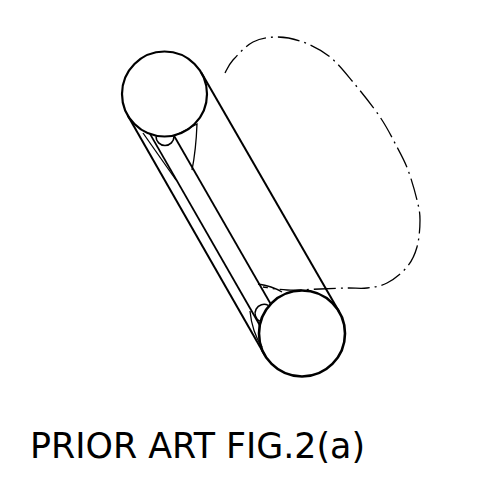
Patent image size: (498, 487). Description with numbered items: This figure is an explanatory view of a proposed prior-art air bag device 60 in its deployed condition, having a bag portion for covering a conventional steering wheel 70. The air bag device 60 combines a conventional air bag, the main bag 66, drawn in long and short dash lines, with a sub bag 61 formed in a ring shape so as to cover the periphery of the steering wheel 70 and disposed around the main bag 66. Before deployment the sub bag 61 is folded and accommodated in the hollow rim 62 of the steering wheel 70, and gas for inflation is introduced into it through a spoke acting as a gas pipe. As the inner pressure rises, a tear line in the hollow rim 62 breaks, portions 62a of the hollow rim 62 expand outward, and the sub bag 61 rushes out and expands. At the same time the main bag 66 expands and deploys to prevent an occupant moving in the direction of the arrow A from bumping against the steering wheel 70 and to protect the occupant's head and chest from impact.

The belt 60 is at (363, 70).
The sub bag 61 is at (188, 56).
The hollow rim 62 is at (168, 163).
The portions of the hollow rim 62a is at (143, 140).
The main bag 66 is at (410, 163).
The steering wheel 70 is at (232, 252).
The direction of the arrow A is at (345, 357).